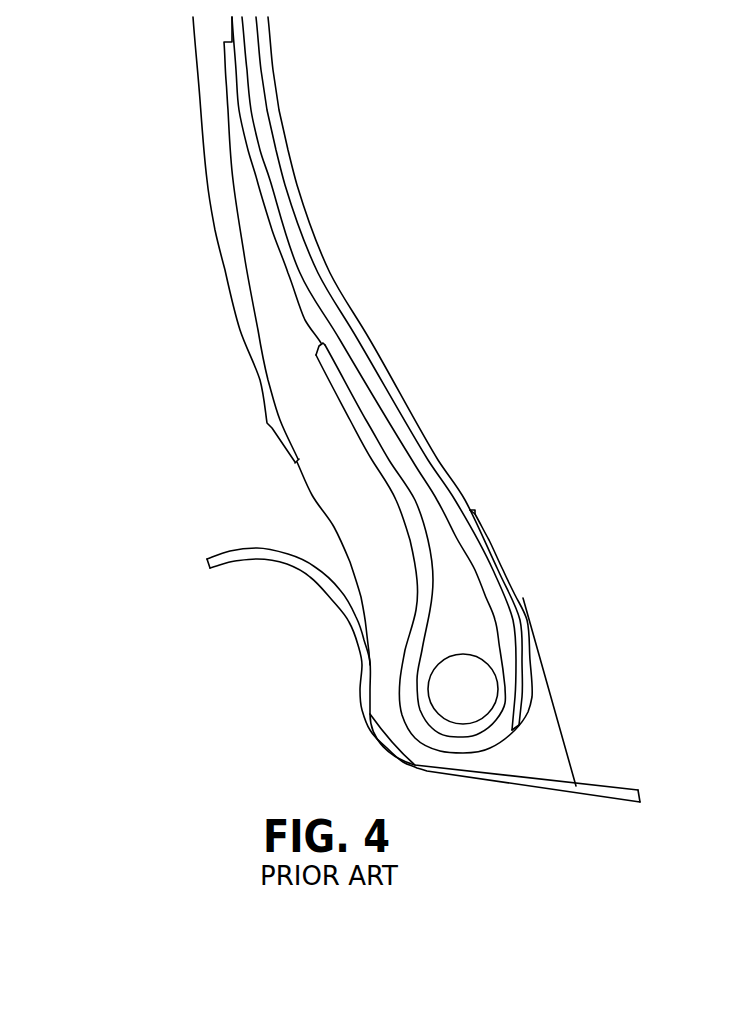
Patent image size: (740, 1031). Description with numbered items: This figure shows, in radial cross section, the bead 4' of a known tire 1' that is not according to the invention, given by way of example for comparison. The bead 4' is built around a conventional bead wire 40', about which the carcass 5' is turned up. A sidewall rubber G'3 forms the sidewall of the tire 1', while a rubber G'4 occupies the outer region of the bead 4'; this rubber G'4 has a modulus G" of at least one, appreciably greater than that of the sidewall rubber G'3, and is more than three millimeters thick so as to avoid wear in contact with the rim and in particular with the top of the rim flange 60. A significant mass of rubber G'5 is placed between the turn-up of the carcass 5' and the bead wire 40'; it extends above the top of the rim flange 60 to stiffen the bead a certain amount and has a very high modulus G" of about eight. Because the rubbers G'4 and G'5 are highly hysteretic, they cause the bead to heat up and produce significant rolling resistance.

The known tire 1' is at (169, 240).
The sidewall rubber G'3 is at (227, 240).
The rubber in the outer region of the bead G'4 is at (382, 385).
The mass of rubber G'5 is at (507, 521).
The carcass 5' is at (416, 401).
The bead 4' is at (316, 563).
The rim flange 60 is at (206, 558).
The conventional bead wire 40' is at (517, 678).